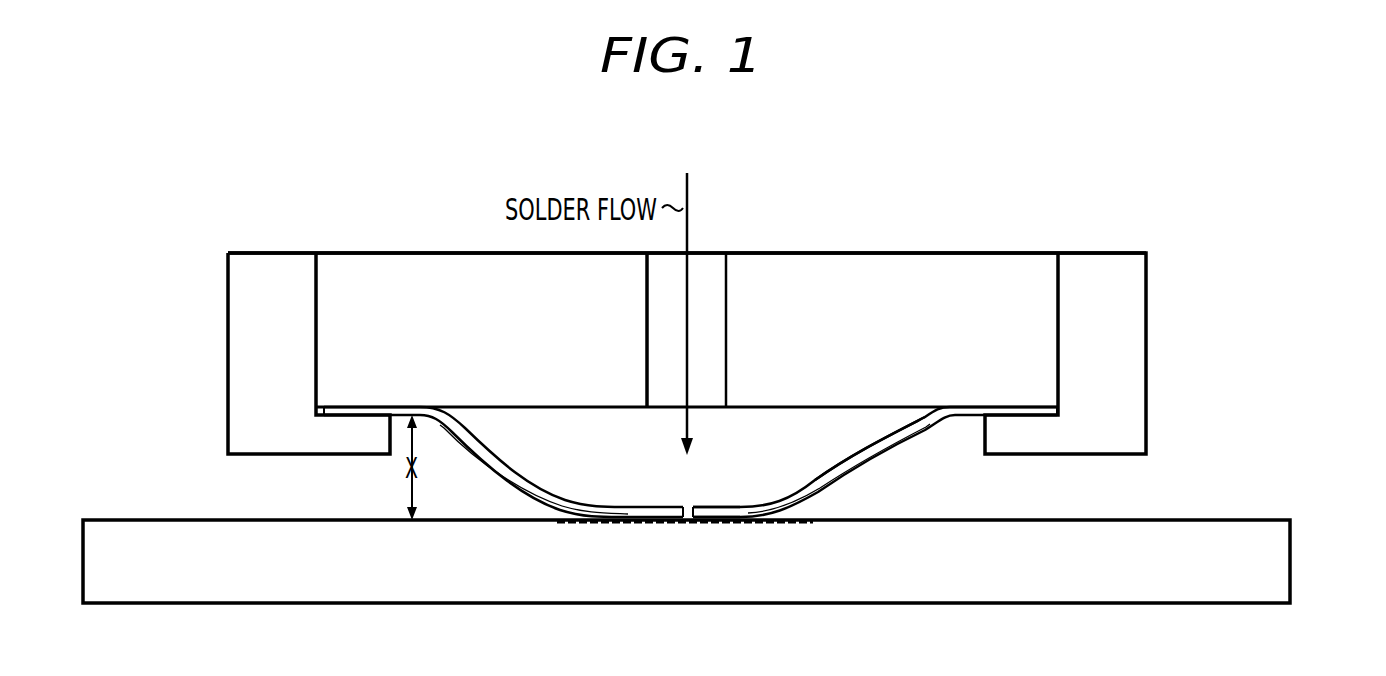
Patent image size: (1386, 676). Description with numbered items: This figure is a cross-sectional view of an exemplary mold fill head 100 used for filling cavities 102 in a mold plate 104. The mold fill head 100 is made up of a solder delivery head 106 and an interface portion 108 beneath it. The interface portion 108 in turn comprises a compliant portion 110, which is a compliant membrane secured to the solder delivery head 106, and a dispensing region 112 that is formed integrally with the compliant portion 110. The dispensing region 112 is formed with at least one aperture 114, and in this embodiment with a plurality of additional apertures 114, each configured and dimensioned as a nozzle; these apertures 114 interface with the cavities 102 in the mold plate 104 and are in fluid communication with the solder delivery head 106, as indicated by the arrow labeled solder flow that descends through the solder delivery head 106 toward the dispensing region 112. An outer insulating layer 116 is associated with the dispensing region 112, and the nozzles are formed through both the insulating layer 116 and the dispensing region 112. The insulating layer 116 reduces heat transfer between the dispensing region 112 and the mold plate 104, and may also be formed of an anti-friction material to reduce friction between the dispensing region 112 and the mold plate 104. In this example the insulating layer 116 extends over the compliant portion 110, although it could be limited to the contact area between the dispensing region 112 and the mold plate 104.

The mold fill head 100 is at (1146, 347).
The cavities 102 is at (730, 523).
The mold plate 104 is at (1290, 562).
The solder delivery head 106 is at (977, 253).
The interface portion 108 is at (969, 416).
The compliant portion 110 is at (875, 458).
The dispensing region 112 is at (718, 508).
The aperture 114 is at (685, 507).
The insulating layer 116 is at (852, 477).